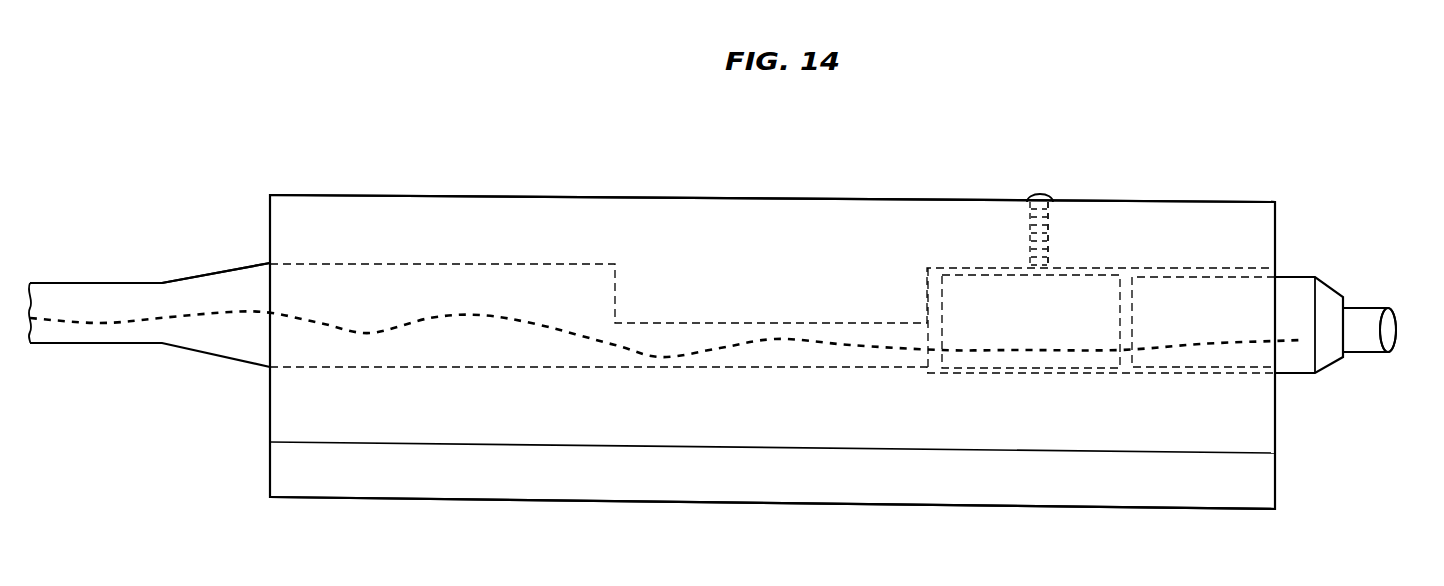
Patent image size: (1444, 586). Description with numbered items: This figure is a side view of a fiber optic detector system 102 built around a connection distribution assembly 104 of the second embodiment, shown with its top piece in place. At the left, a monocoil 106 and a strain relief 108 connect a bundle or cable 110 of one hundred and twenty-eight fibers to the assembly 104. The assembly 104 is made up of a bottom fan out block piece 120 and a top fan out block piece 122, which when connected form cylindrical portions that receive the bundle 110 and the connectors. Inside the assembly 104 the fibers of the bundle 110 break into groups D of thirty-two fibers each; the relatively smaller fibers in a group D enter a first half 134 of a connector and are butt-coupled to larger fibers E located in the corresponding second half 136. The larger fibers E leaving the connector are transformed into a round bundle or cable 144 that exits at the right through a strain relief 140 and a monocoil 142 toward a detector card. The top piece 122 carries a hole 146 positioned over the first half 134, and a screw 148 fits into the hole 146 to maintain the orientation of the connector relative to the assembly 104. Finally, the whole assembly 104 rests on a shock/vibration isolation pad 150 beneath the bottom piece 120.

The fiber optic detector system 102 is at (268, 93).
The connection distribution assembly 104 is at (462, 140).
The monocoil 106 is at (128, 345).
The strain relief 108 is at (208, 273).
The bundle or cable 110 is at (90, 322).
The bottom fan out block piece 120 is at (317, 407).
The top fan out block piece 122 is at (518, 218).
The first half 134 is at (1073, 290).
The second half 136 is at (1155, 290).
The strain relief 140 is at (1328, 353).
The monocoil 142 is at (1378, 350).
The round bundle or cable 144 is at (1365, 327).
The holes 146 is at (1052, 228).
The screws 148 is at (1031, 200).
The shock/vibration isolation pad 150 is at (583, 477).
The groups of fibers D is at (1012, 345).
The larger fibers E is at (1195, 330).